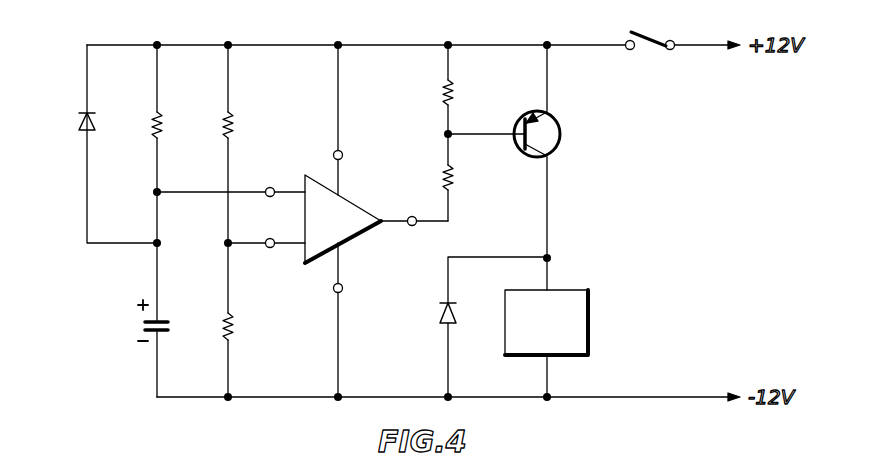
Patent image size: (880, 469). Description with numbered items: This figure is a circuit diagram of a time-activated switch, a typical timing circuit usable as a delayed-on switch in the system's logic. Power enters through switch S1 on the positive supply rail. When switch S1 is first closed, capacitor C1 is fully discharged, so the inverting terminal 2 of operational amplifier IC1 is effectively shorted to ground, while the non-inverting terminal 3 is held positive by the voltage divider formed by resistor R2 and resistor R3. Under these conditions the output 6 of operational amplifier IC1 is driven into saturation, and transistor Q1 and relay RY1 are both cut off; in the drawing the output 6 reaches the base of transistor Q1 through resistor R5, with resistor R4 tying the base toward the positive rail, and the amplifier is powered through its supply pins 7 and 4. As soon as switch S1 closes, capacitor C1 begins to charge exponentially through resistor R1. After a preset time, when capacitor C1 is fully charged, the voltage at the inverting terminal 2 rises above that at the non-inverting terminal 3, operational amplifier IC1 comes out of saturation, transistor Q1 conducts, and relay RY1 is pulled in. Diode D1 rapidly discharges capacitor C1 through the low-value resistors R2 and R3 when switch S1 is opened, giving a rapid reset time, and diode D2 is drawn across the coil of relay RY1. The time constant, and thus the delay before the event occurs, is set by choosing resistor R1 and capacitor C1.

The diode D1 is at (90, 131).
The resistor R1 is at (163, 125).
The resistor R2 is at (234, 125).
The resistor R3 is at (234, 326).
The resistor R4 is at (454, 93).
The resistor R5 is at (454, 181).
The capacitor C1 is at (161, 321).
The operational amplifier IC1 is at (349, 211).
The inverting terminal 2 is at (231, 181).
The non-inverting terminal 3 is at (266, 233).
The negative supply pin 4 is at (346, 320).
The output pin 6 is at (414, 210).
The positive supply pin 7 is at (346, 120).
The transistor Q1 is at (562, 128).
The switch S1 is at (658, 37).
The diode D2 is at (440, 314).
The relay RY1 is at (546, 343).